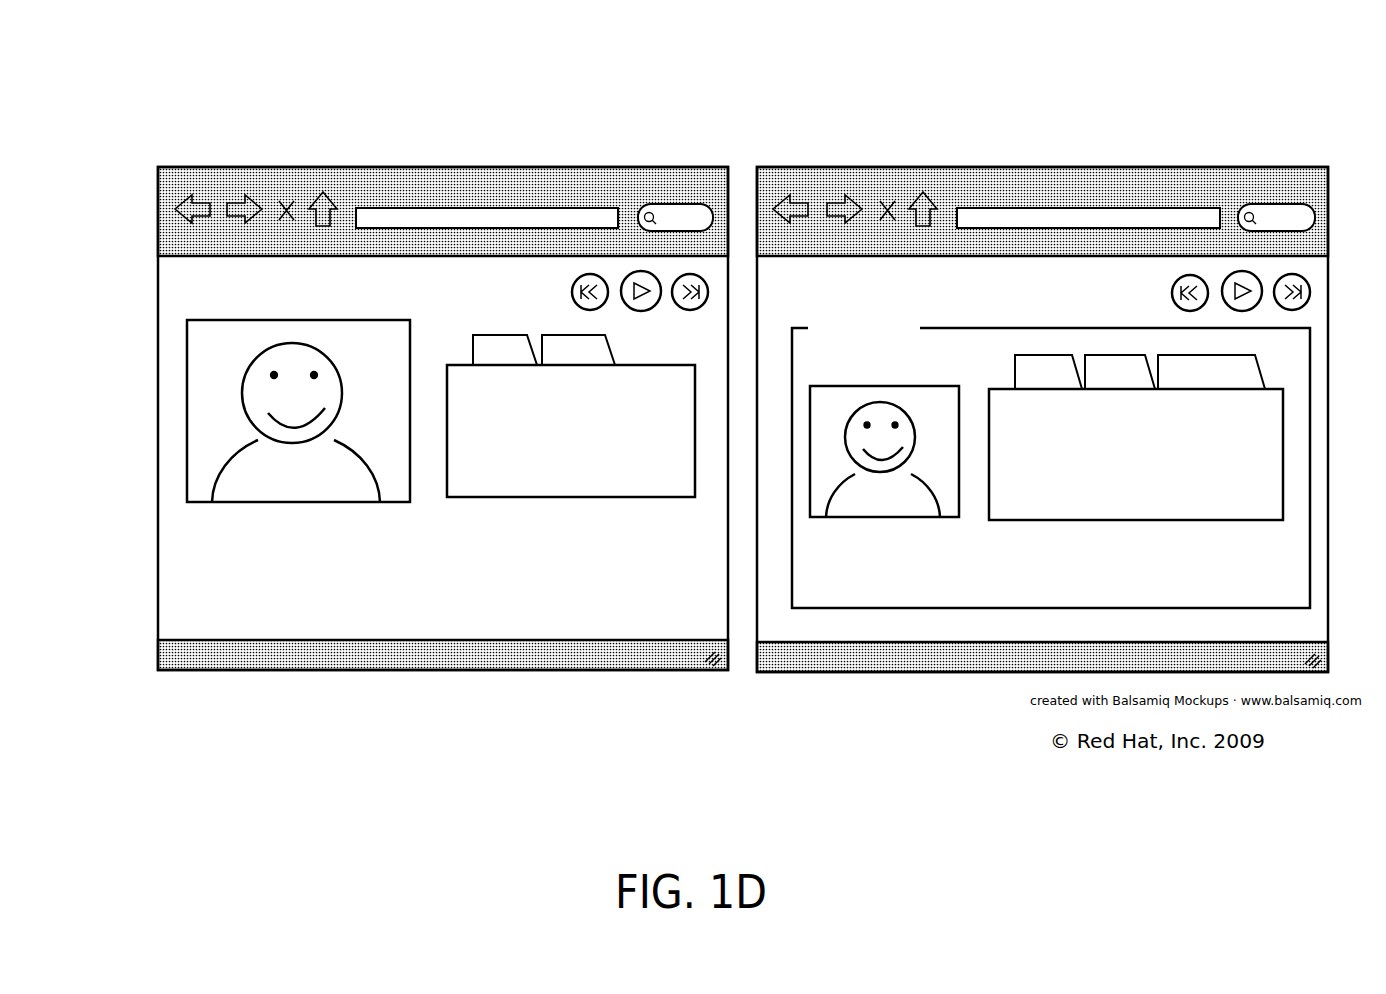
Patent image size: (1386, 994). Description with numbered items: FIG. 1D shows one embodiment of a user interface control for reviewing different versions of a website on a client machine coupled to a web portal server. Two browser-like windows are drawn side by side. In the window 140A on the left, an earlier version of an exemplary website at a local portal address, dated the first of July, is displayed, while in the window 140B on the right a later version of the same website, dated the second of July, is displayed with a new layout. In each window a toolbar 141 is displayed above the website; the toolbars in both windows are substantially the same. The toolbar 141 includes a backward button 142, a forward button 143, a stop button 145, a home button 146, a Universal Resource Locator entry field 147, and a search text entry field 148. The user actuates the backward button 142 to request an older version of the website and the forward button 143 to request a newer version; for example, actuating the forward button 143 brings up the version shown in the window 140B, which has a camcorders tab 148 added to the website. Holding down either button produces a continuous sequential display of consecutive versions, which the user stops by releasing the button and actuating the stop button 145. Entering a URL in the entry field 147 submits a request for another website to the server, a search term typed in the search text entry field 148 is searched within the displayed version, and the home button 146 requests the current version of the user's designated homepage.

The window 140A is at (497, 142).
The window 140B is at (1103, 118).
The toolbar 141 is at (156, 240).
The backward button 142 is at (186, 188).
The forward button 143 is at (241, 188).
The stop button 145 is at (285, 192).
The home button 146 is at (336, 190).
The URL entry field 147 is at (576, 200).
The search text entry field 148 is at (689, 200).